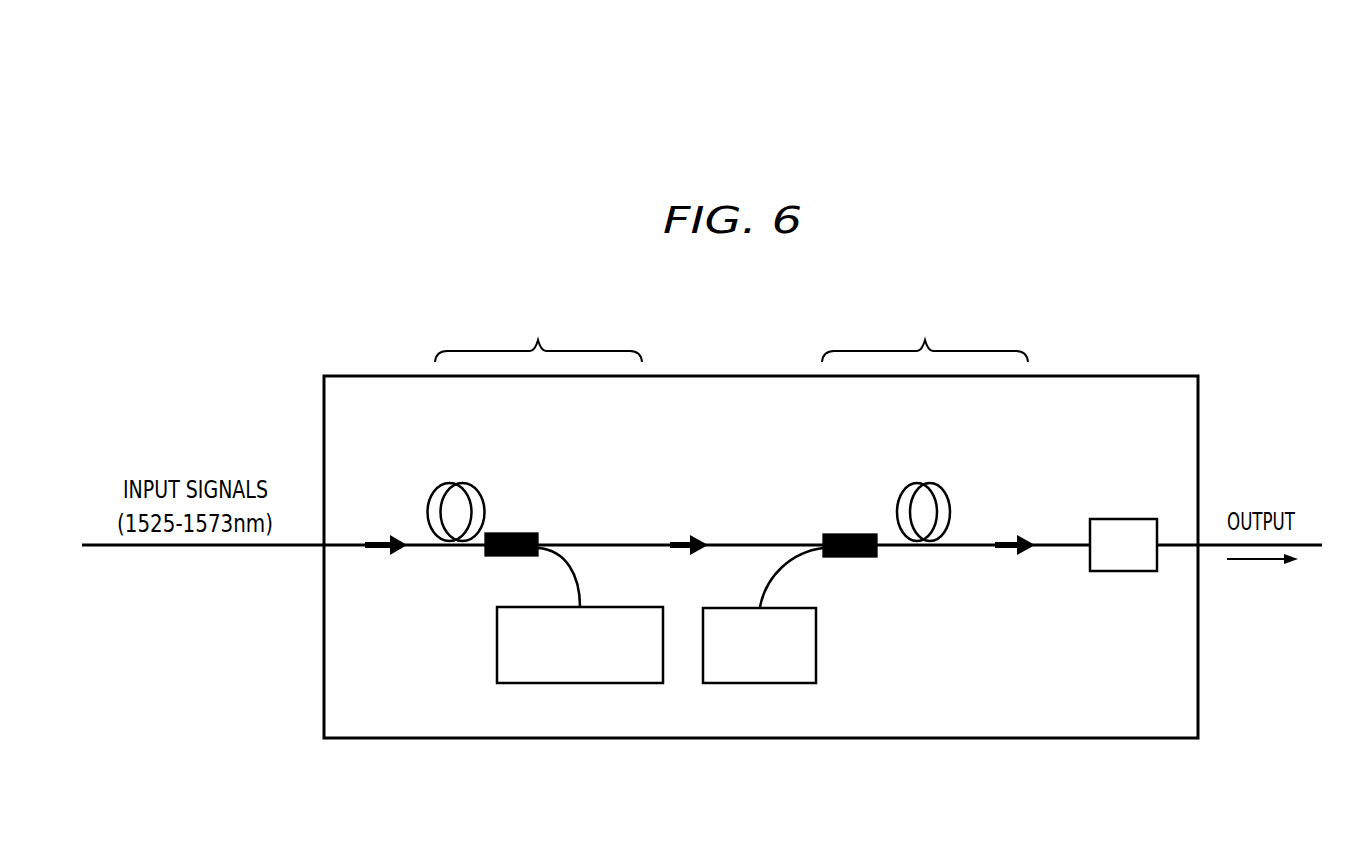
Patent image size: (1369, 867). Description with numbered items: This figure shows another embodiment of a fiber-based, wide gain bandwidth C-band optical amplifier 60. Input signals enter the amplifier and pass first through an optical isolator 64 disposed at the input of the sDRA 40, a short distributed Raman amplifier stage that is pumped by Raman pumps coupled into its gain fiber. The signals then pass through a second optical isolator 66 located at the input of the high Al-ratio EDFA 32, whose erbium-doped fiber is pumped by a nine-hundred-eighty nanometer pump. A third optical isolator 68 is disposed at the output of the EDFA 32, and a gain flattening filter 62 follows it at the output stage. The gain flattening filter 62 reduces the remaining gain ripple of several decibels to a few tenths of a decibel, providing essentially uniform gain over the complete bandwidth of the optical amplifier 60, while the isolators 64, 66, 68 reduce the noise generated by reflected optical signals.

The optical amplifier 60 is at (1070, 280).
The sDRA 40 is at (551, 331).
The high Al-ratio EDFA 32 is at (936, 331).
The optical isolator 64 is at (380, 538).
The optical isolator 66 is at (686, 553).
The optical isolator 68 is at (1009, 553).
The gain flattening filter (GFF) 62 is at (1125, 518).